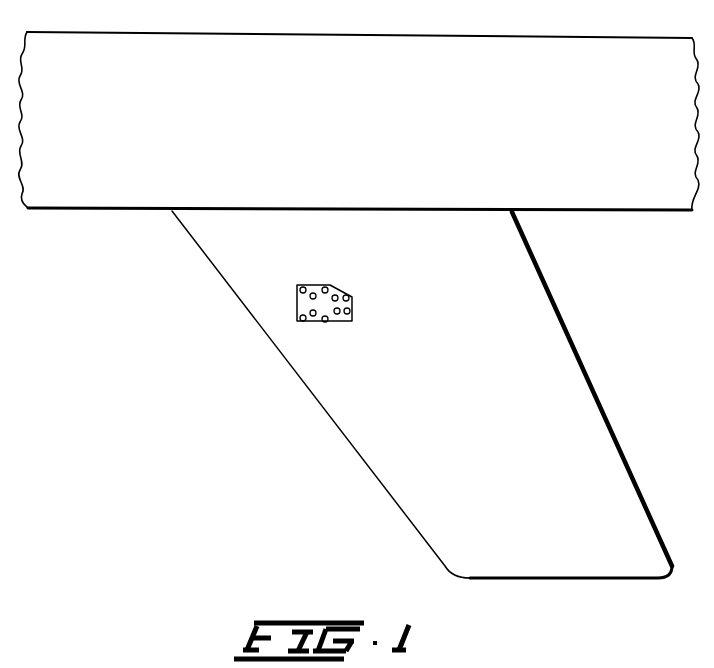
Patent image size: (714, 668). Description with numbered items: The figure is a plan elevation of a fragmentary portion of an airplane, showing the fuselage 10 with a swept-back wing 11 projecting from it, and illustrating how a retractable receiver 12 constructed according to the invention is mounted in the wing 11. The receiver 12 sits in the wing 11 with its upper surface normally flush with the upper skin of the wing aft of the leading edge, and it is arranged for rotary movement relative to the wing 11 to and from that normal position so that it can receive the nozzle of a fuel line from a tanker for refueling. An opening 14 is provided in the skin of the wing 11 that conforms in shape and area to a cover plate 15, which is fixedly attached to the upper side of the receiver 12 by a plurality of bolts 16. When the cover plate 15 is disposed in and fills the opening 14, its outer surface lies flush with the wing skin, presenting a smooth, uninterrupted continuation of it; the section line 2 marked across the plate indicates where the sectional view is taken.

The aircraft wing / fuselage 10 is at (356, 41).
The strut 11 is at (530, 266).
The perforated plate / fairing 12 is at (322, 279).
The plate lower edge / bottom 14 is at (311, 328).
The plate body 15 is at (312, 303).
The holes 16 is at (353, 297).
The section line 2- 2 is at (407, 324).